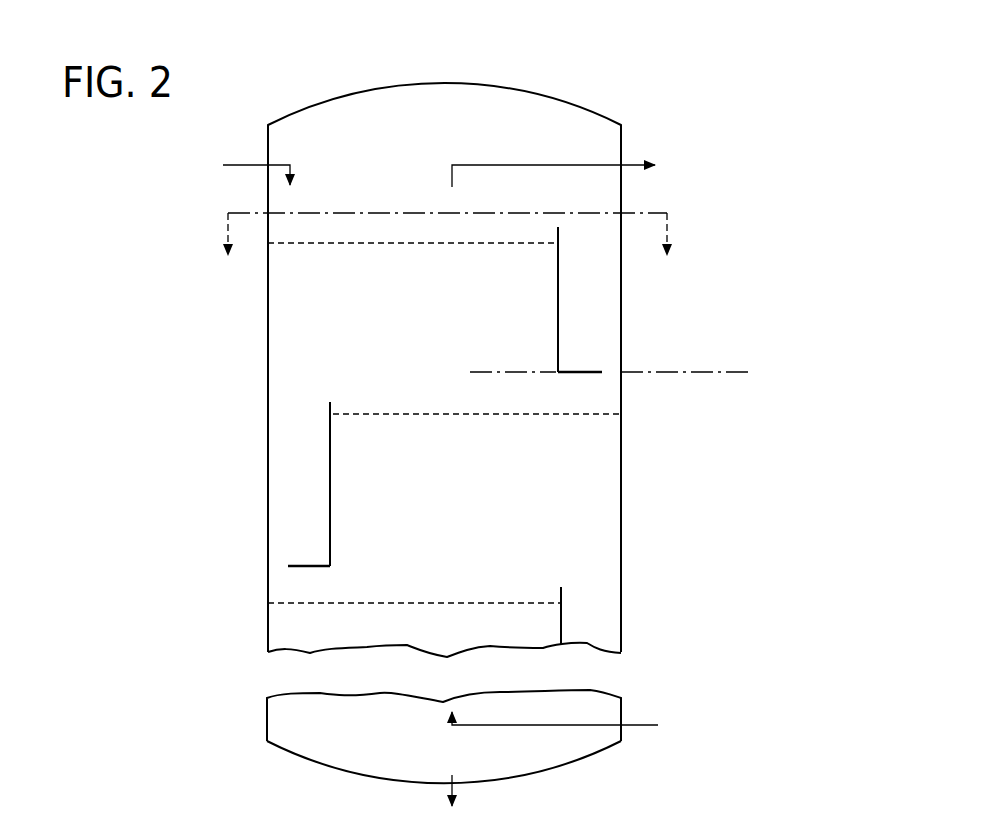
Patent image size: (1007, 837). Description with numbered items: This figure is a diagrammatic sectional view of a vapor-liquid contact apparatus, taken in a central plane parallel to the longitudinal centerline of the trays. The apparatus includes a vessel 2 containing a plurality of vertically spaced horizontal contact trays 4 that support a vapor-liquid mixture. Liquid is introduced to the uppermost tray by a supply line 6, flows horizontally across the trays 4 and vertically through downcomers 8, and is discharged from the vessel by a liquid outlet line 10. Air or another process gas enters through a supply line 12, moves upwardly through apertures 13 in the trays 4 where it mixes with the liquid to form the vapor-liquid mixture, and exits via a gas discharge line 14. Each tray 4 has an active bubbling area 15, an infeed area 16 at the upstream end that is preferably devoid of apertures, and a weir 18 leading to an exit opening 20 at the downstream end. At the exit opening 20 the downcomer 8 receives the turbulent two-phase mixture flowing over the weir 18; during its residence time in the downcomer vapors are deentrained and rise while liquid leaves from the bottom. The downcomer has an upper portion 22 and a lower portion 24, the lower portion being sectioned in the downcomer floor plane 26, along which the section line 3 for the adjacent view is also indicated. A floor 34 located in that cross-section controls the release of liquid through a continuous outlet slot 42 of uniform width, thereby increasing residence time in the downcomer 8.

The vessel 2 is at (627, 57).
The section line for FIG. 3 is at (448, 242).
The contact trays 4 is at (452, 398).
The supply line 6 is at (248, 165).
The downcomers 8 is at (280, 490).
The liquid outlet line 10 is at (453, 788).
The supply line 12 is at (638, 725).
The apertures 13 is at (363, 413).
The gas discharge line 14 is at (570, 165).
The active bubbling area 15 is at (420, 413).
The infeed area 16 is at (597, 417).
The weir 18 is at (328, 409).
The exit opening 20 is at (276, 405).
The upper portion 22 is at (276, 428).
The lower portion 24 is at (278, 520).
The downcomer floor plane 26 is at (720, 372).
The floor 34 is at (585, 370).
The outlet slot 42 is at (280, 567).